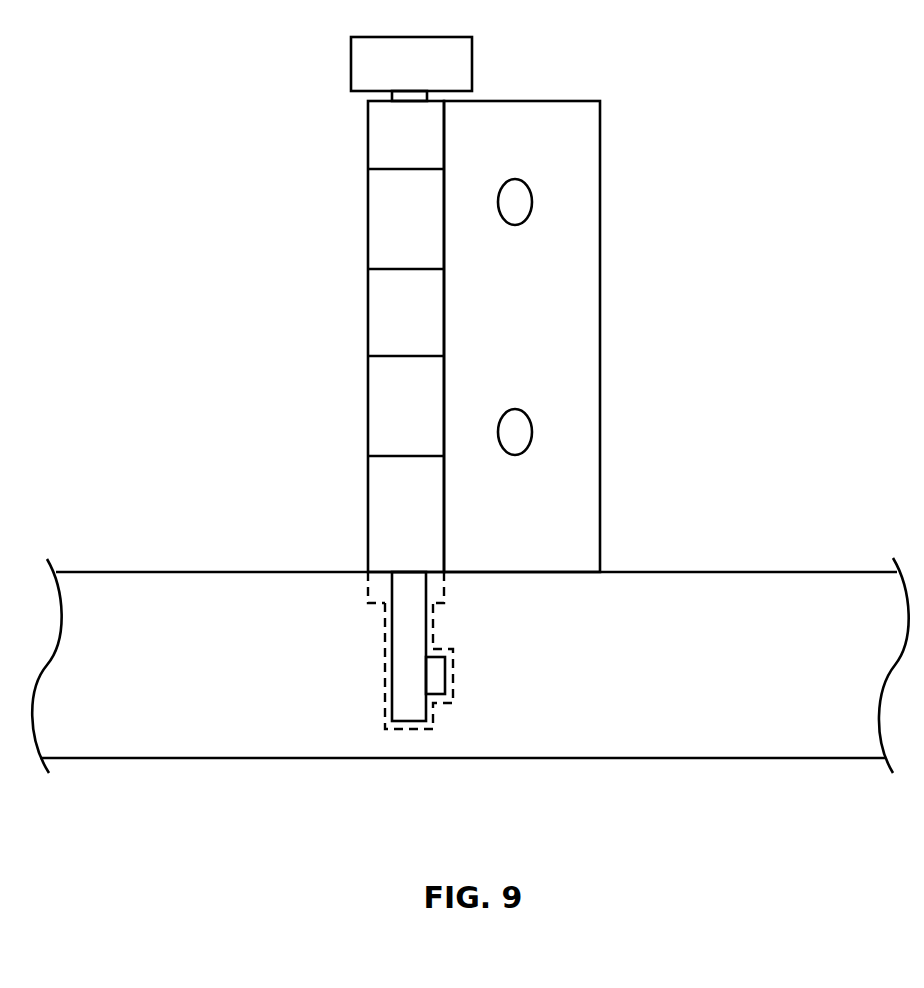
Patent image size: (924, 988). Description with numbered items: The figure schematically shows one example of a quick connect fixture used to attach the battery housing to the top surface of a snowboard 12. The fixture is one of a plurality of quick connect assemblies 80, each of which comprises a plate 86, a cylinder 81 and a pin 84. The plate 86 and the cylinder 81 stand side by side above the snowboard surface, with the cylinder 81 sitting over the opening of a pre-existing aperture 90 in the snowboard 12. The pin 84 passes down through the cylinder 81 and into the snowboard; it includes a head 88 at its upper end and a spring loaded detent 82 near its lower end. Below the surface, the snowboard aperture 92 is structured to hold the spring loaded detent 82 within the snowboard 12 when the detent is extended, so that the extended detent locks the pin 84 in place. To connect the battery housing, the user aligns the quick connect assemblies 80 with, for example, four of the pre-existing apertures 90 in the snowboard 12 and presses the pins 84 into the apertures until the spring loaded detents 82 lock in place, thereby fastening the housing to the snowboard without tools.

The snowboard 12 is at (770, 742).
The quick connect assembly 80 is at (303, 106).
The cylinder 81 is at (367, 218).
The spring loaded detent 82 is at (447, 675).
The pin 84 is at (392, 692).
The plate 86 is at (586, 327).
The head 88 is at (351, 56).
The pre-existing aperture 90 is at (367, 583).
The snowboard aperture 92 is at (434, 628).